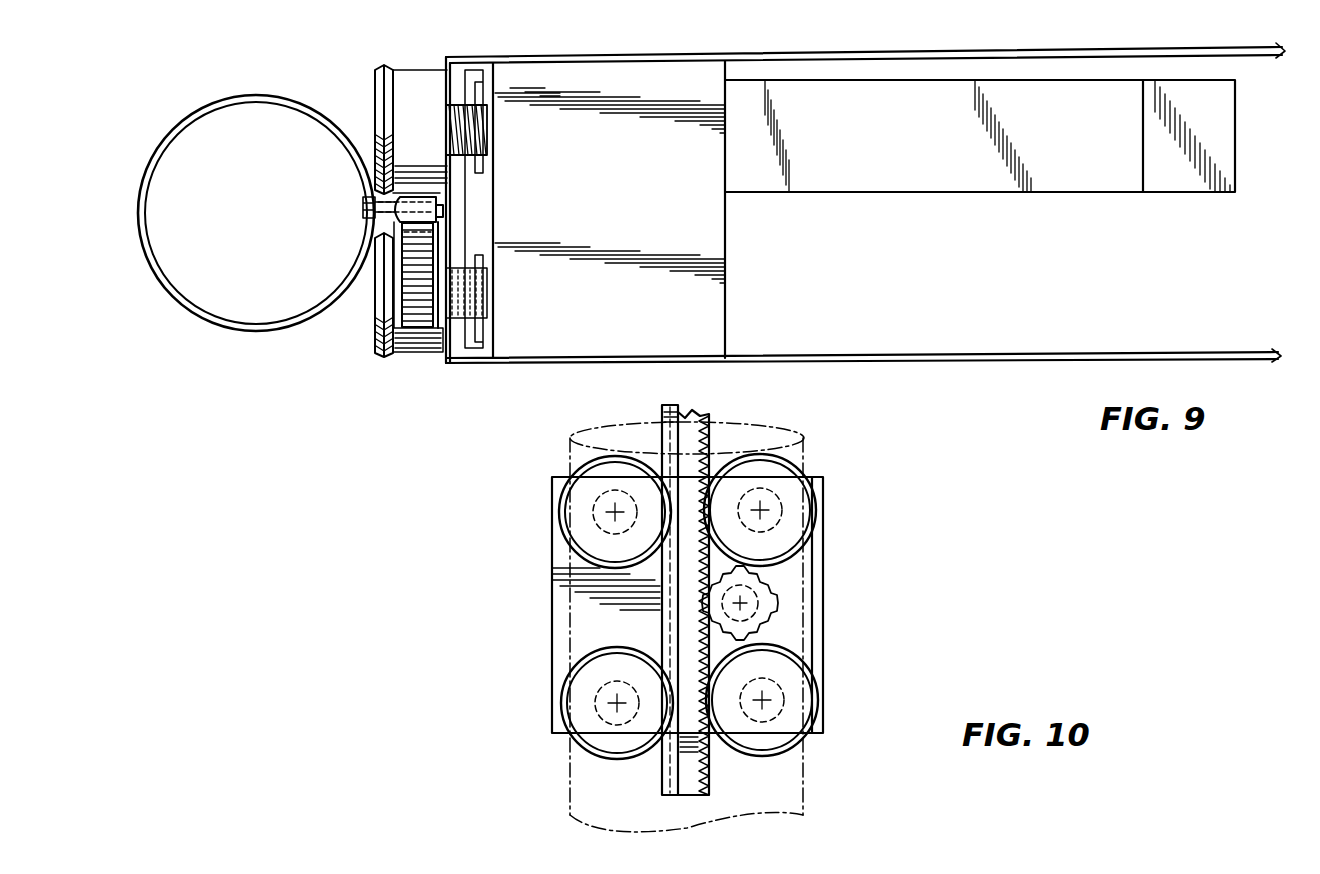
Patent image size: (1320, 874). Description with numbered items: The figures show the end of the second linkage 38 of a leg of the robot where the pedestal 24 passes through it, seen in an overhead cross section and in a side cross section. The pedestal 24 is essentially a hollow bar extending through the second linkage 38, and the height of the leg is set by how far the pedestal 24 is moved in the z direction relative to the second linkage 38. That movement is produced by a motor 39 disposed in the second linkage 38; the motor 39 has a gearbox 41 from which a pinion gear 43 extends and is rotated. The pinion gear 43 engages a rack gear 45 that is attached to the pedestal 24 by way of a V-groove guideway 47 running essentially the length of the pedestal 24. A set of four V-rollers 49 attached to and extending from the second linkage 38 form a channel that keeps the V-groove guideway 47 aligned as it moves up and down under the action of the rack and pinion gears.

In FIG. 9, the pedestal 24 is at (292, 331).
In FIG. 10, the pedestal 24 is at (803, 440).
In FIG. 9, the second linkage 38 is at (766, 56).
In FIG. 9, the motor 39 is at (905, 157).
In FIG. 9, the gearbox 41 is at (606, 229).
In FIG. 9, the pinion gear 43 is at (421, 331).
In FIG. 10, the pinion gear 43 is at (770, 606).
In FIG. 9, the rack gear 45 is at (442, 205).
In FIG. 10, the rack gear 45 is at (700, 762).
In FIG. 9, the V-groove guideway 47 is at (364, 196).
In FIG. 10, the V-groove guideway 47 is at (663, 768).
In FIG. 9, the V-rollers 49 is at (387, 68).
In FIG. 10, the V-rollers 49 is at (588, 458).